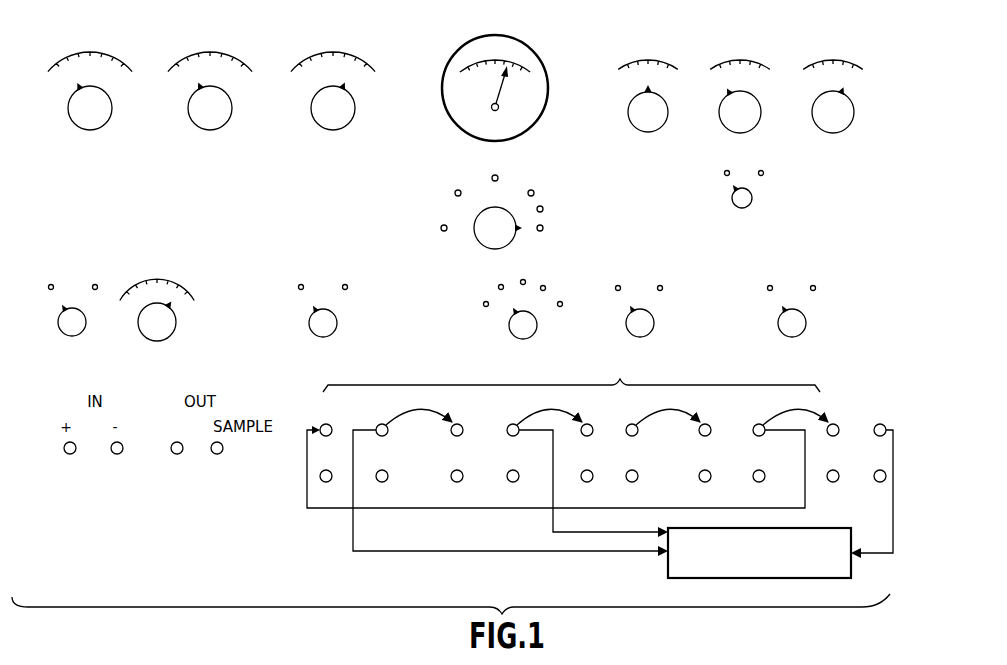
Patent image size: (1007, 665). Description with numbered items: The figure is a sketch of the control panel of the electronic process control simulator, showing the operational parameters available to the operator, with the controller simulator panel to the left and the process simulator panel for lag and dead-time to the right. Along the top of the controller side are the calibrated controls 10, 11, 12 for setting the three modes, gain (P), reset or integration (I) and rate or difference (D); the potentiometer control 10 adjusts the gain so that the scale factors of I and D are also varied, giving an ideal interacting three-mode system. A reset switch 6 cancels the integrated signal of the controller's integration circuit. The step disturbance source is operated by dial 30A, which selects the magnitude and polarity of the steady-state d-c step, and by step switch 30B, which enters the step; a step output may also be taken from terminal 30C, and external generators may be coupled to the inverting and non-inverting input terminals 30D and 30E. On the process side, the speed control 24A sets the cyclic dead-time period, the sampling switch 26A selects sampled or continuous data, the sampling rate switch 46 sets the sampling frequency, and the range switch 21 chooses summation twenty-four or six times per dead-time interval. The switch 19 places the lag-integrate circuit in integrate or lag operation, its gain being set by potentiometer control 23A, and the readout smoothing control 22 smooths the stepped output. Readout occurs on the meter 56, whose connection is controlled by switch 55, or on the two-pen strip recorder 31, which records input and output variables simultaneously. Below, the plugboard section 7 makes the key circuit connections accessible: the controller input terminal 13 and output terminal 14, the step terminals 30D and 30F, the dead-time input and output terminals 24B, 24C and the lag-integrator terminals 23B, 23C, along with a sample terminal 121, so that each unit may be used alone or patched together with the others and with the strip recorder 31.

The potentiometer control 10 is at (92, 67).
The calibrated control 11 is at (215, 67).
The calibrated control 12 is at (338, 67).
The meter 56 is at (527, 52).
The speed control 24A is at (648, 81).
The potentiometer control 23A is at (742, 82).
The readout smoothing control 22 is at (840, 71).
The switch 55 is at (508, 200).
The switch 19 is at (750, 200).
The switch control 30B is at (72, 336).
The control 30A is at (160, 332).
The reset switch 6 is at (325, 295).
The sampling rate switch 46 is at (520, 338).
The sampling switch 26A is at (645, 336).
The range switch 21 is at (798, 336).
The inverting input terminal 30D is at (70, 454).
The non-inverting input terminal 30E is at (117, 454).
The terminal 30C is at (177, 454).
The sample output terminal 121 is at (219, 454).
The plugboard section 7 is at (613, 376).
The terminal 13 is at (330, 481).
The terminal 14 is at (386, 481).
The step output terminal 30F is at (513, 482).
The input terminal 24B is at (587, 482).
The output terminal 24C is at (636, 481).
The integrator input terminal 23B is at (705, 482).
The integrator output terminal 23C is at (759, 482).
The strip recorder 31 is at (668, 562).